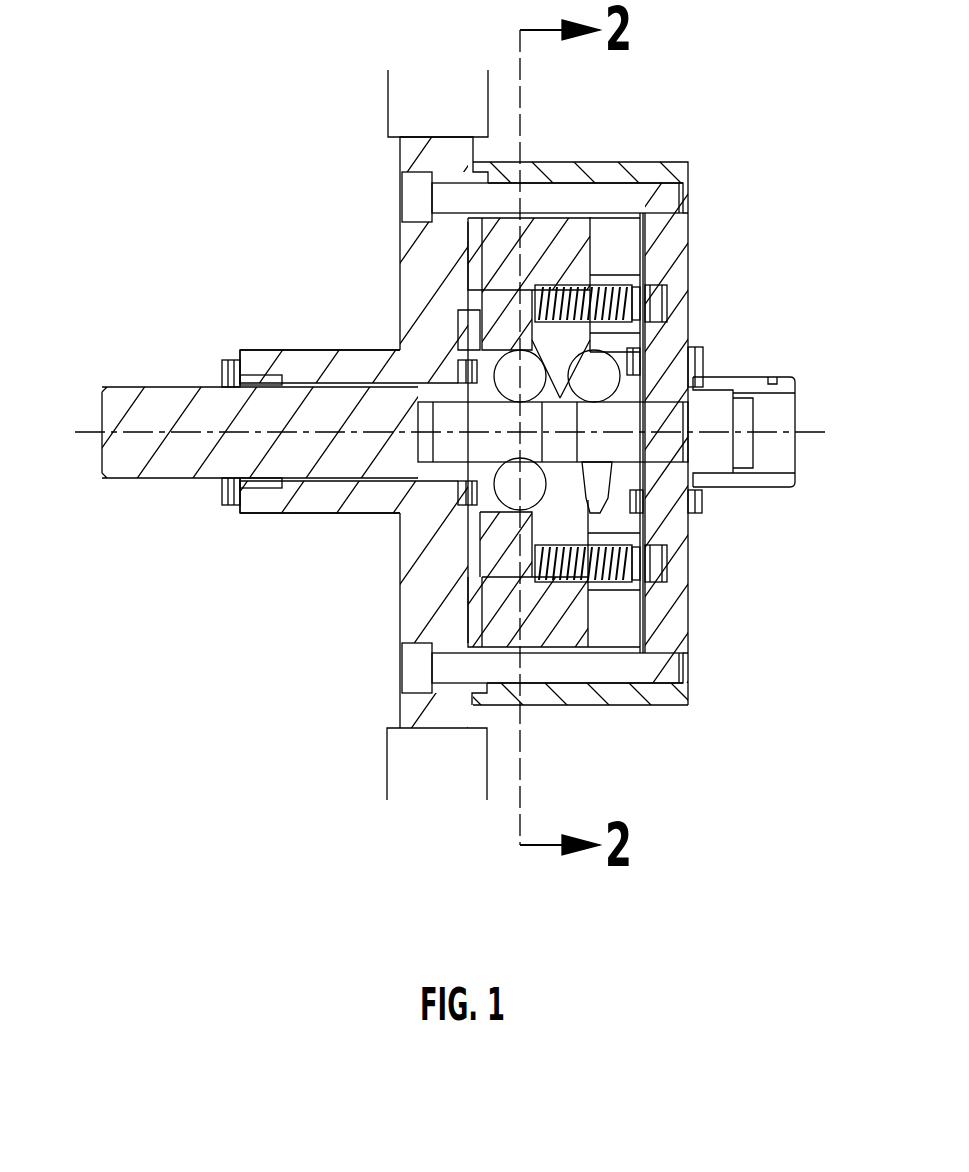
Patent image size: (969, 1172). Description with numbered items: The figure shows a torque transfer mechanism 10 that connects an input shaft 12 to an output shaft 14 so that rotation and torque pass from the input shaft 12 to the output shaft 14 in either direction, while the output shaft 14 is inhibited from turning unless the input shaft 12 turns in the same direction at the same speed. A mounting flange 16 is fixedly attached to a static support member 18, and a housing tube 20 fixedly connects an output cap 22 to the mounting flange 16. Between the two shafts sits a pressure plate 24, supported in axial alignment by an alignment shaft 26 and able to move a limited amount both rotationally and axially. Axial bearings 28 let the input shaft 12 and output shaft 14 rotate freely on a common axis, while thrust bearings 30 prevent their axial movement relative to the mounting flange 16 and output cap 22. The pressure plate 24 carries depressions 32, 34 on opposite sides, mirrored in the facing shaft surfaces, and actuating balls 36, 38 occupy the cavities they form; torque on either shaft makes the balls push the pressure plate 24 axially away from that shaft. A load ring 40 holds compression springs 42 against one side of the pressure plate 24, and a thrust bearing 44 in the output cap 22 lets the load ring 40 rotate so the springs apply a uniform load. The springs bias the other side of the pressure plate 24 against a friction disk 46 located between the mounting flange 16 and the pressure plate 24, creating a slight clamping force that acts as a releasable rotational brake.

The torque transfer mechanism 10 is at (122, 117).
The input shaft 12 is at (125, 385).
The output shaft 14 is at (792, 377).
The mounting flange 16 is at (402, 630).
The static support member 18 is at (390, 72).
The housing tube 20 is at (620, 703).
The output cap 22 is at (688, 163).
The pressure plate 24 is at (547, 220).
The alignment shaft 26 is at (697, 480).
The axial bearings 28 is at (400, 513).
The thrust bearings 30 is at (458, 372).
The depressions 32 is at (400, 567).
The depressions 34 is at (665, 525).
The actuating ball 36 is at (477, 383).
The actuating ball 38 is at (660, 283).
The load ring 40 is at (623, 592).
The compression springs 42 is at (603, 288).
The thrust bearing 44 is at (672, 563).
The friction disk 46 is at (405, 173).